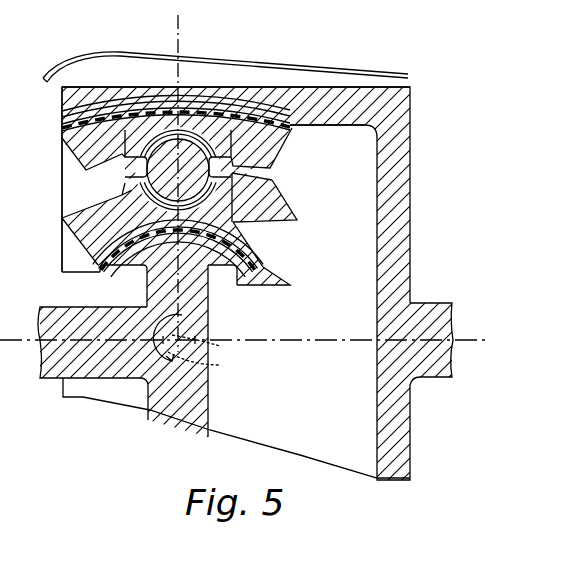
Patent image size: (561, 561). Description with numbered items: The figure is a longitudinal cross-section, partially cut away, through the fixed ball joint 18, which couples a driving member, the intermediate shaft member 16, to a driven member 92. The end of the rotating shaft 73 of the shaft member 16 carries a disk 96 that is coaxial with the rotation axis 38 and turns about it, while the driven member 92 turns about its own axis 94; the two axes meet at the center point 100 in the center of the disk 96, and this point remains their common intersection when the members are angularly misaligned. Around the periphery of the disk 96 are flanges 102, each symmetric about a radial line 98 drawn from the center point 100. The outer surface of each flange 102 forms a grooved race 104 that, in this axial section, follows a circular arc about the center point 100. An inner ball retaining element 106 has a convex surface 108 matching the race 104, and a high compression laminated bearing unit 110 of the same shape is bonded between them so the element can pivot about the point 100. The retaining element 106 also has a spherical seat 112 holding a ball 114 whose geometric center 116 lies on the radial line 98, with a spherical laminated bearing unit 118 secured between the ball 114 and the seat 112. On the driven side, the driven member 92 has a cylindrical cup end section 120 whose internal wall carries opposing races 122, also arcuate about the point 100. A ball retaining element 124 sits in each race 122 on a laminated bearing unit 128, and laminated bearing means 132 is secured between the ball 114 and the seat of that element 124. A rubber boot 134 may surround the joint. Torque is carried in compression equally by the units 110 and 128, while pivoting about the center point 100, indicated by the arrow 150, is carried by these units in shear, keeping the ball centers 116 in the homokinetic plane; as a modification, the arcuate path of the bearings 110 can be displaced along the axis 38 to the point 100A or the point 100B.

The intermediate shaft member 16 is at (83, 383).
The fixed ball joint 18 is at (413, 85).
The rotation axis 38 is at (114, 383).
The rotating shaft 73 is at (56, 306).
The driven member 92 is at (420, 302).
The axis 94 is at (330, 340).
The disk 96 is at (212, 300).
The radial line 98 is at (182, 20).
The center point 100 is at (160, 332).
The axially displaced point 100A is at (220, 365).
The axially displaced point 100B is at (220, 346).
The flange 102 is at (266, 284).
The race 104 is at (110, 264).
The inner ball retaining element 106 is at (273, 213).
The convex surface 108 is at (262, 235).
The high compression laminated bearing unit 110 is at (120, 222).
The spherical seat 112 is at (192, 172).
The ball 114 is at (229, 160).
The geometric center 116 is at (127, 160).
The spherical laminated bearing unit 118 is at (237, 190).
The cylindrical cup end section 120 is at (408, 147).
The race 122 is at (62, 107).
The ball retaining element 124 is at (220, 120).
The high compression laminated bearing unit 128 is at (293, 128).
The laminated bearing means 132 is at (162, 132).
The rubber boot 134 is at (157, 54).
The arrow 150 is at (147, 307).